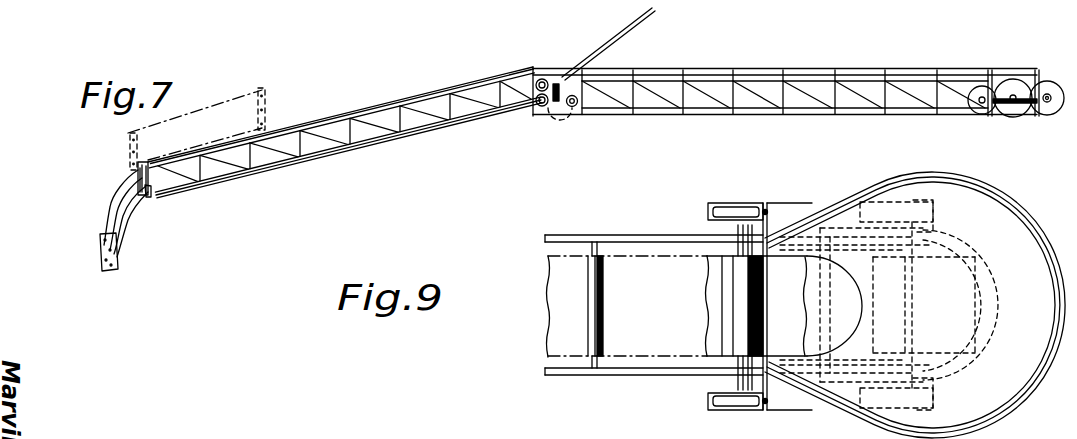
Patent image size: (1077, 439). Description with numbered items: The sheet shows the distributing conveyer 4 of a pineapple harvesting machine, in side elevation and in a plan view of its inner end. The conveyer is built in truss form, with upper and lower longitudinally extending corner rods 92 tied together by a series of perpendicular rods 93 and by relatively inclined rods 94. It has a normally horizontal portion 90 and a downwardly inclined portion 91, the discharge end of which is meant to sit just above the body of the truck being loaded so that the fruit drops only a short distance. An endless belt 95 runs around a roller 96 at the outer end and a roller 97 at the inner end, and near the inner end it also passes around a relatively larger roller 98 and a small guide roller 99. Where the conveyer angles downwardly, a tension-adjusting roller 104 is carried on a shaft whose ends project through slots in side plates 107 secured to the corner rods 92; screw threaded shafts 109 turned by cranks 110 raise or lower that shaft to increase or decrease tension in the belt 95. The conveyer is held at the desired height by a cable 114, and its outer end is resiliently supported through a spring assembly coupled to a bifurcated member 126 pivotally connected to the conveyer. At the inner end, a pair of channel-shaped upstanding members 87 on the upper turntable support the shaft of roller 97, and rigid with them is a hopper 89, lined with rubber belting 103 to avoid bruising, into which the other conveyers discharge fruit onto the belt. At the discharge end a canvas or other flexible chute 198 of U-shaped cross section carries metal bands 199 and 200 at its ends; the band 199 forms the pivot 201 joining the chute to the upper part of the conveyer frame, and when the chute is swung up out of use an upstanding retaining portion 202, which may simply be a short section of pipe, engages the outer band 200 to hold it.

In FIG. 7, the distributing conveyer 4 is at (767, 110).
In FIG. 9, the distributing conveyer 4 is at (585, 374).
In FIG. 9, the upstanding members 87 is at (742, 208).
In FIG. 9, the hopper 89 is at (1014, 210).
In FIG. 7, the horizontal portion 90 is at (798, 68).
In FIG. 7, the downwardly inclined portion 91 is at (406, 101).
In FIG. 7, the corner rods 92 is at (477, 84).
In FIG. 7, the rods 93 is at (685, 105).
In FIG. 7, the inclined rods 94 is at (660, 88).
In FIG. 7, the endless belt 95 is at (366, 120).
In FIG. 9, the endless belt 95 is at (712, 270).
In FIG. 7, the roller 96 is at (150, 188).
In FIG. 7, the roller 97 is at (1049, 82).
In FIG. 7, the larger roller 98 is at (1019, 106).
In FIG. 7, the guide roller 99 is at (987, 112).
In FIG. 9, the rubber belting 103 is at (1018, 248).
In FIG. 7, the roller 104 is at (560, 112).
In FIG. 7, the side plates 107 is at (580, 86).
In FIG. 7, the screw threaded shafts 109 is at (563, 77).
In FIG. 7, the cranks 110 is at (539, 64).
In FIG. 7, the cable 114 is at (658, 10).
In FIG. 7, the bifurcated member 126 is at (633, 30).
In FIG. 7, the flexible chute 198 is at (217, 107).
In FIG. 7, the metal band 199 is at (140, 175).
In FIG. 7, the metal band 200 is at (125, 250).
In FIG. 7, the pivot 201 is at (143, 170).
In FIG. 7, the retaining portion 202 is at (267, 128).